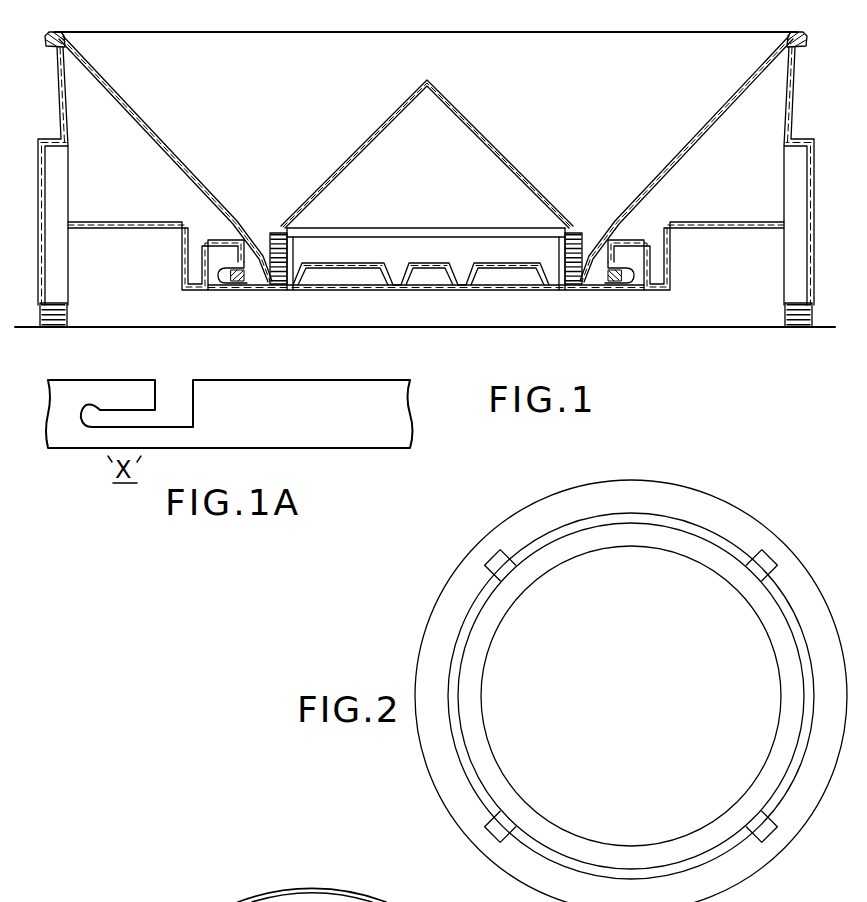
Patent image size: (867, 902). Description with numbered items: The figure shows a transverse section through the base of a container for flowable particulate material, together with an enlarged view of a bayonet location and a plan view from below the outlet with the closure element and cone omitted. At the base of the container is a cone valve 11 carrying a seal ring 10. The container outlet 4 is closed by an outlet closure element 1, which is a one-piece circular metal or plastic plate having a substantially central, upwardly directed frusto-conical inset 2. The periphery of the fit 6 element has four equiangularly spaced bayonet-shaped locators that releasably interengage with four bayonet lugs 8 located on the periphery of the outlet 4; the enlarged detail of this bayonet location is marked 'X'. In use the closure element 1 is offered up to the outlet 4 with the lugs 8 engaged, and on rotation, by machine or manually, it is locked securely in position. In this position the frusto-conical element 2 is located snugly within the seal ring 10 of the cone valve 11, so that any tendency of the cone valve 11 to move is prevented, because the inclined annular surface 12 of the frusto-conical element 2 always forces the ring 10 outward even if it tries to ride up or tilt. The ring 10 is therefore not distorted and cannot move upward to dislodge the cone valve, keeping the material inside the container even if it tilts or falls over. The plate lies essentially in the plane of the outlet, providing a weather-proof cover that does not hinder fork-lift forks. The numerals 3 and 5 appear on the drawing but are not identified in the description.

In FIG. 1, the outlet closure element 1 is at (592, 292).
In FIG. 1, the frusto-conical inset 2 is at (350, 268).
In FIG. 1, the left channel profile 3 is at (244, 288).
In FIG. 1, the container outlet 4 is at (606, 238).
In FIG. 2, the container outlet 4 is at (642, 695).
In FIG. 1, the housing 5 is at (597, 114).
In FIG. 1, the fit element 6 is at (637, 285).
In FIG. 2, the bayonet lugs 8 is at (496, 563).
In FIG. 1, the seal ring 10 is at (557, 248).
In FIG. 1, the cone valve 11 is at (477, 128).
In FIG. 1, the inclined annular surface 12 is at (303, 291).